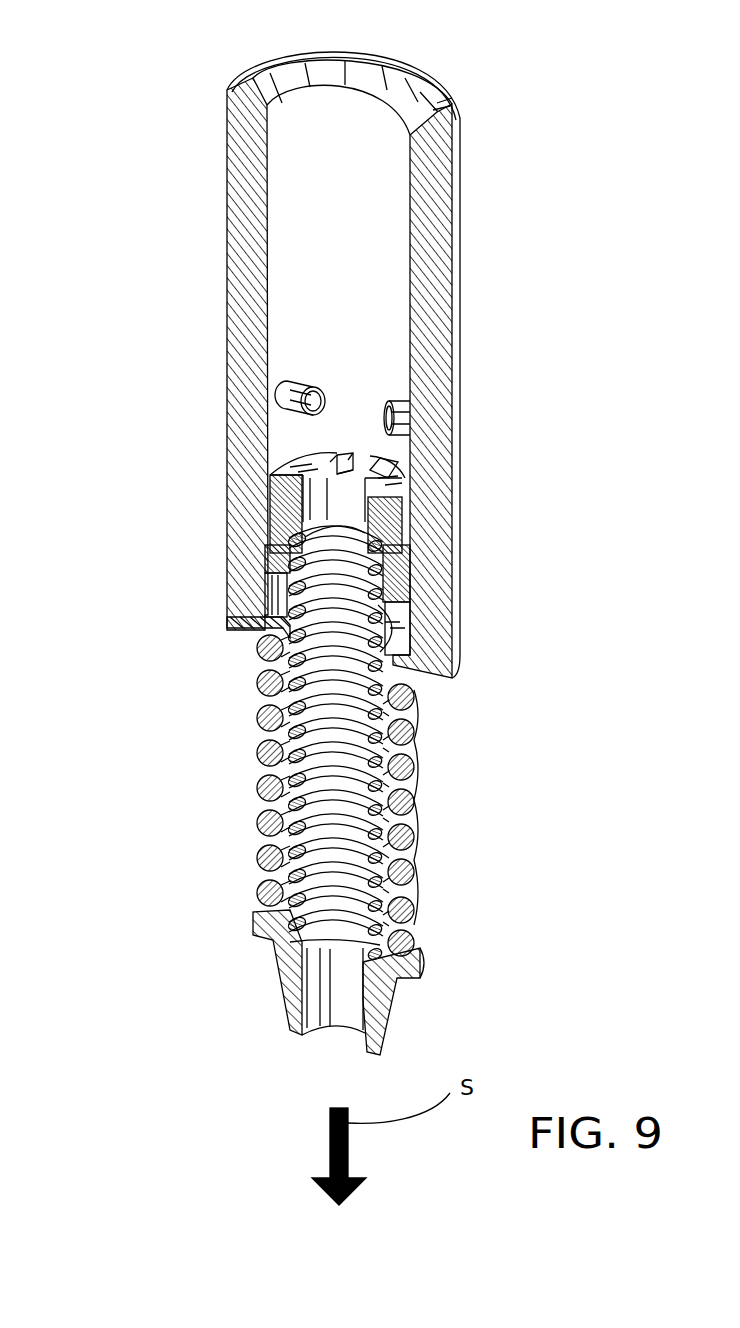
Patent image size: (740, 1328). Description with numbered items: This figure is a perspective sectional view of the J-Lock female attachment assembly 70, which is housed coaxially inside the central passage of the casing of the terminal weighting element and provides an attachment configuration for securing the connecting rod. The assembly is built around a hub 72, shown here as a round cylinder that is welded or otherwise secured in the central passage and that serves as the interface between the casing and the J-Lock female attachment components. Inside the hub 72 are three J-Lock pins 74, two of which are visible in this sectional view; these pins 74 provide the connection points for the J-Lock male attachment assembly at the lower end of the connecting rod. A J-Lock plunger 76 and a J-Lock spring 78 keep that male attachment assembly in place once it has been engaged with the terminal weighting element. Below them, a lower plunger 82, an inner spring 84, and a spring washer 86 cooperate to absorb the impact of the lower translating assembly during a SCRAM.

The J-Lock female attachment assembly 70 is at (560, 192).
The hub 72 is at (227, 190).
The J-Lock pins 74 is at (400, 398).
The J-Lock plunger 76 is at (403, 537).
The J-Lock spring 78 is at (420, 789).
The lower plunger 82 is at (400, 1003).
The inner spring 84 is at (307, 872).
The spring washer 86 is at (237, 632).